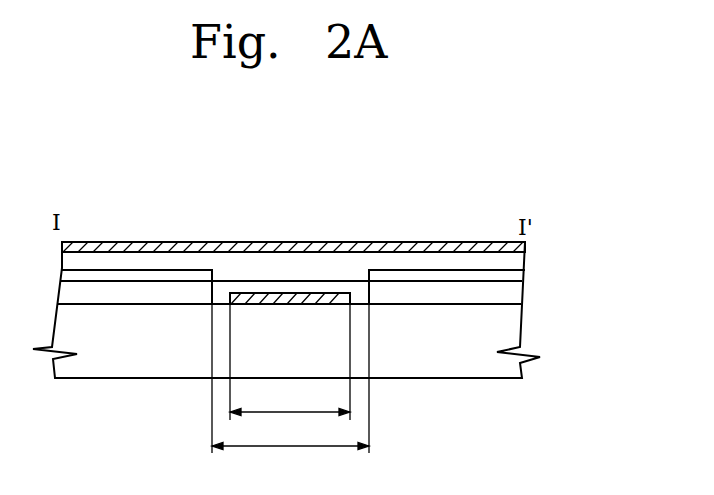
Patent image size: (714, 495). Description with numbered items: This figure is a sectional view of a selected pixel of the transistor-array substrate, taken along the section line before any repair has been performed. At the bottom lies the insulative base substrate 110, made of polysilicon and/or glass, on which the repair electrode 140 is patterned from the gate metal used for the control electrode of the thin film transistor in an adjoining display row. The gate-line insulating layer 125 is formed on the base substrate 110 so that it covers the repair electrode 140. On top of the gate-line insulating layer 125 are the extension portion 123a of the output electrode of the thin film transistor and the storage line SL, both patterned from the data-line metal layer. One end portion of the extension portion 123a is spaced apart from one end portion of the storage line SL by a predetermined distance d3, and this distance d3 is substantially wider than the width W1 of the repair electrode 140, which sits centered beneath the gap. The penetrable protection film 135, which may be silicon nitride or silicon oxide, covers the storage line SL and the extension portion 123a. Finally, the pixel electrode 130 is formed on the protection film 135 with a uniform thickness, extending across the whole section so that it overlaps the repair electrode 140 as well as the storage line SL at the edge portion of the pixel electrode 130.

The base substrate 110 is at (508, 331).
The gate-line insulating layer 125 is at (510, 294).
The penetrable protection film 135 is at (517, 262).
The pixel electrode 130 is at (527, 247).
The extension portion 123a is at (127, 273).
The storage line SL is at (442, 277).
The repair electrode 140 is at (268, 298).
The width of the repair electrode W1 is at (290, 362).
The distance between the extension portion and the storage line d3 is at (290, 378).